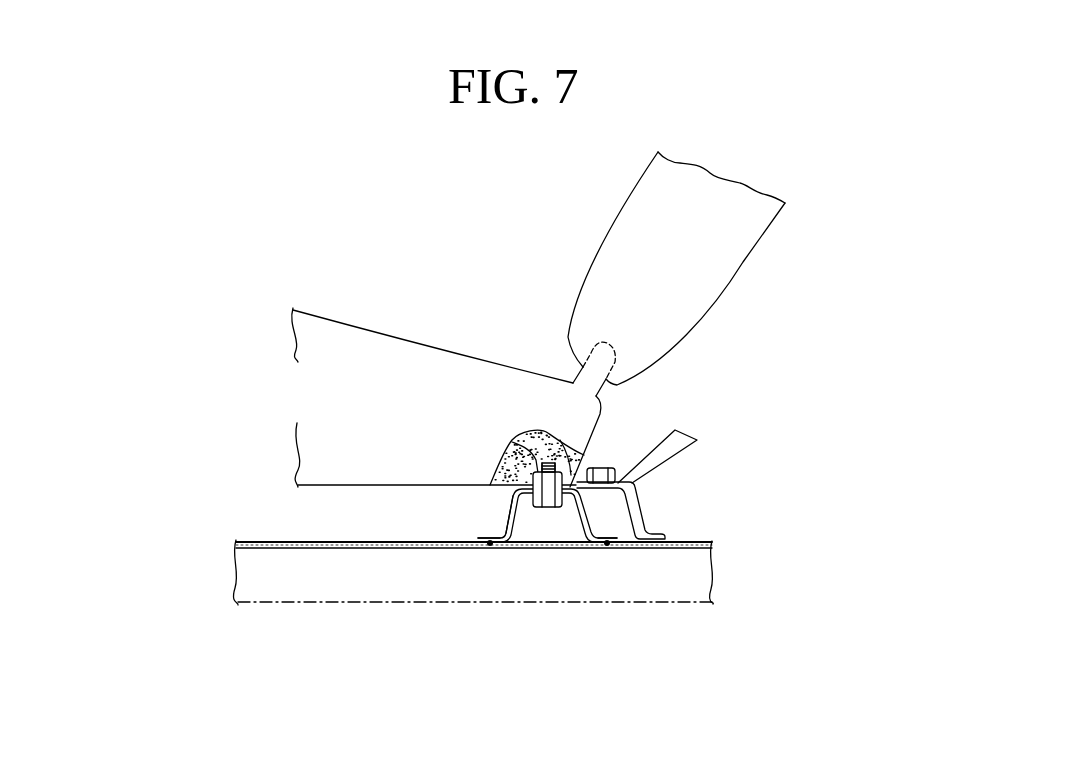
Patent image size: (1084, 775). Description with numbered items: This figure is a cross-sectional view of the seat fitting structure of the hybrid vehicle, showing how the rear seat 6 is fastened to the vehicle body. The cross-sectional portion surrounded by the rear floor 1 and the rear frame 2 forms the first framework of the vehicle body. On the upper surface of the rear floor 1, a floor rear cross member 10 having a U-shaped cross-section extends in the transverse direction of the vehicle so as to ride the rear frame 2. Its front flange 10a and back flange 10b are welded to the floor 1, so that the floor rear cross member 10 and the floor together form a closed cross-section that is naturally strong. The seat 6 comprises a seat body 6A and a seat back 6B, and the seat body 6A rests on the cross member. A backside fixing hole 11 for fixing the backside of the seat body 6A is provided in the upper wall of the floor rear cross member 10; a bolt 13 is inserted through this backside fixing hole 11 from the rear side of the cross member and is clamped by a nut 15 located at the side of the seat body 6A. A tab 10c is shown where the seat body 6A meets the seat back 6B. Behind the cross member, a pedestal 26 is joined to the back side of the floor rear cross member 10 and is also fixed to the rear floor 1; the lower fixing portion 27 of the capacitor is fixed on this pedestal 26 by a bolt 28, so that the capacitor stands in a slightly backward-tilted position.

The rear floor 1 is at (426, 551).
The rear frame 2 is at (672, 603).
The seat 6 is at (584, 319).
The seat body 6A is at (460, 357).
The seat back 6B is at (745, 258).
The floor rear cross member 10 is at (590, 520).
The front flange 10a is at (478, 538).
The back flange 10b is at (613, 538).
The engagement tab 10c is at (553, 451).
The backside fixing hole 11 is at (512, 498).
The bolt 13 is at (547, 506).
The nut 15 is at (512, 443).
The pedestal 26 is at (633, 494).
The lower fixing portion 27 is at (651, 455).
The bolt 28 is at (603, 468).